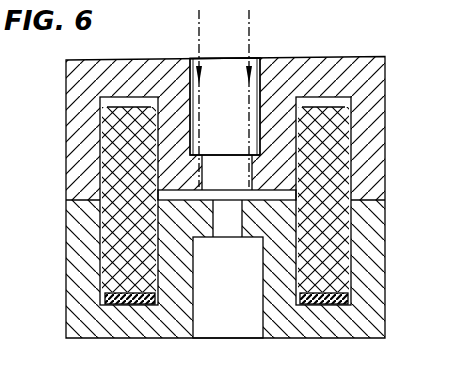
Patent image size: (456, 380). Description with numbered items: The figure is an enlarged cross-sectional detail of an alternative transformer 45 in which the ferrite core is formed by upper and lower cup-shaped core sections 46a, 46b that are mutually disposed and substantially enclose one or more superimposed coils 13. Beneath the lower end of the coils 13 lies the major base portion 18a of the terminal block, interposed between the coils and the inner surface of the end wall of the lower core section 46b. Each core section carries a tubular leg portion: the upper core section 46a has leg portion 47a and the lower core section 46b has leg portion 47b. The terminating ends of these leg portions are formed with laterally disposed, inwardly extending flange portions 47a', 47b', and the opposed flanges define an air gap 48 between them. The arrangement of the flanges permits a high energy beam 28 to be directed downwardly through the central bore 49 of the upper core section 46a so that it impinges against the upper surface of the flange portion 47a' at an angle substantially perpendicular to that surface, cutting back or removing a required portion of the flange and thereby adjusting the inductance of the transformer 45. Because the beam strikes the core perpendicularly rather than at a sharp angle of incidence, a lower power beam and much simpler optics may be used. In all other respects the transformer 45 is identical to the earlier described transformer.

The transformer 45 is at (313, 46).
The upper cup-shaped core section 46a is at (389, 115).
The lower cup-shaped core section 46b is at (390, 241).
The coils 13 is at (100, 222).
The major base portion 18a is at (125, 304).
The tubular leg portion 47a is at (225, 106).
The flange portion 47a' is at (227, 160).
The flange portion 47b' is at (223, 239).
The tubular leg portion 47b is at (228, 287).
The air gap 48 is at (205, 199).
The central bore 49 is at (220, 70).
The high energy beam 28 is at (198, 48).